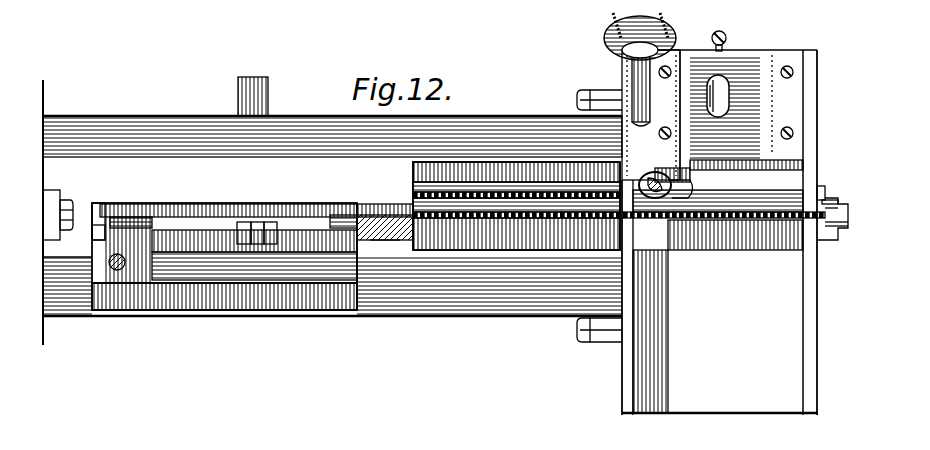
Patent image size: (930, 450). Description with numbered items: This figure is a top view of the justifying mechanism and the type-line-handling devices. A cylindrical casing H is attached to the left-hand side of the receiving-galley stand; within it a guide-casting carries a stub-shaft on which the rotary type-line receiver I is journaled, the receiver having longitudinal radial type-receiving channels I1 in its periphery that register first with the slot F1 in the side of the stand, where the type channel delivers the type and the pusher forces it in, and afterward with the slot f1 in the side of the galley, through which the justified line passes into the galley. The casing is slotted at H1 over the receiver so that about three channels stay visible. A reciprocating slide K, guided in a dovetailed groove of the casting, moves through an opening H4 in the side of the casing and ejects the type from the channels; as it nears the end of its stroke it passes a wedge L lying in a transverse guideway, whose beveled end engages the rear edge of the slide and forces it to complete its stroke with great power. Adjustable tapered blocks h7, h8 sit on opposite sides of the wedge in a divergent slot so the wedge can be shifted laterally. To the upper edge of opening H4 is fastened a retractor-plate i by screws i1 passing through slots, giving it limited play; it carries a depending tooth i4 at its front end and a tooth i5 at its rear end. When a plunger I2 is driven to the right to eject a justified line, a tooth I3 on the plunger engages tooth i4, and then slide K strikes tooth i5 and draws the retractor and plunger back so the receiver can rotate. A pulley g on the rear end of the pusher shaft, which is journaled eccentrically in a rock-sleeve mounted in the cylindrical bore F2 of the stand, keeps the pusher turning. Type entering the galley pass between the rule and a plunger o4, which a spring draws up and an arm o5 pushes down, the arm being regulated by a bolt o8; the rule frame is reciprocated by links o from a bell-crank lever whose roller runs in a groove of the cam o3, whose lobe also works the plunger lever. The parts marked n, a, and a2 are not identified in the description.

The cylindrical casing H is at (531, 116).
The wedge L is at (260, 230).
The reciprocating slide K is at (117, 270).
The opening H4 is at (205, 297).
The rod n is at (332, 280).
The retractor-plate i is at (214, 210).
The tooth i5 is at (104, 210).
The screws i1 is at (136, 212).
The tooth I3 is at (163, 208).
The adjustable tapered block h7 is at (239, 232).
The adjustable tapered block h8 is at (293, 232).
The plungers I2 is at (337, 217).
The depending tooth i4 is at (388, 228).
The rotary type-line receiver I is at (488, 190).
The type-receiving channels I1 is at (527, 199).
The slot H1 is at (480, 220).
The slot f1 is at (625, 219).
The slot F1 is at (697, 232).
The cylindrical bore F2 is at (652, 124).
The pawl a2 is at (650, 62).
The pulley g is at (627, 36).
The bolt o8 is at (725, 40).
The arm o5 is at (726, 78).
The plunger o4 is at (746, 152).
The slide a is at (652, 200).
The links o is at (797, 222).
The cam o3 is at (834, 228).